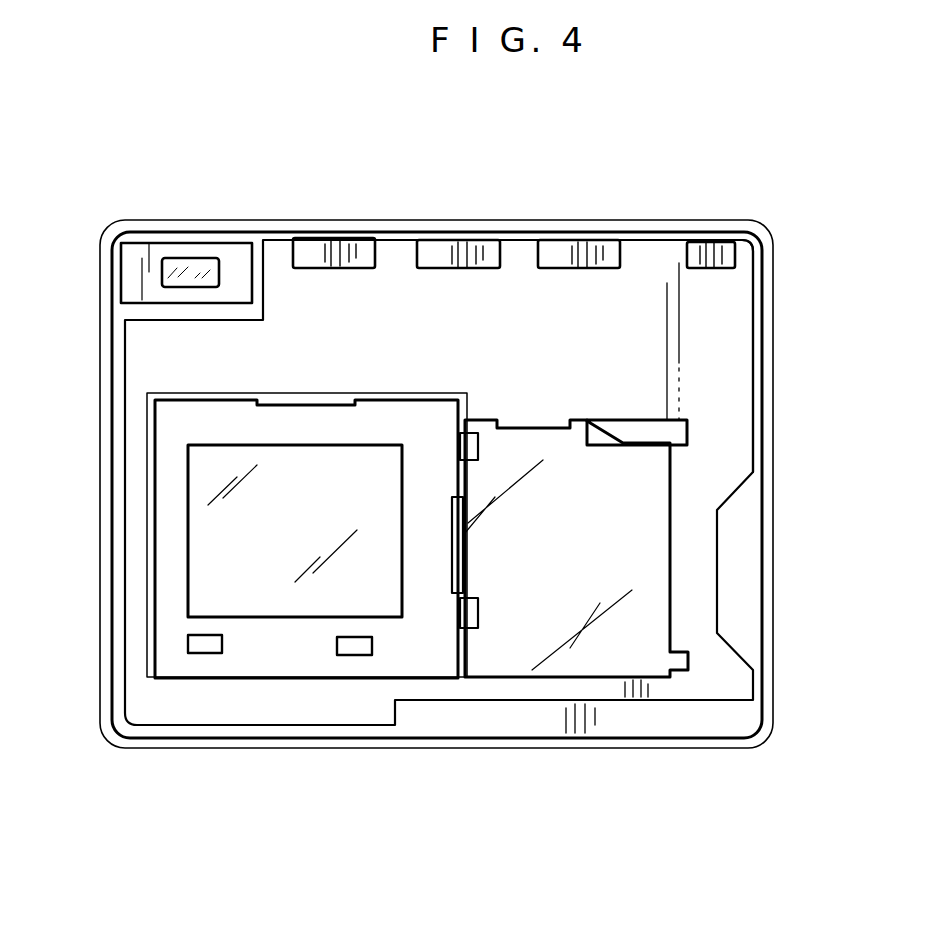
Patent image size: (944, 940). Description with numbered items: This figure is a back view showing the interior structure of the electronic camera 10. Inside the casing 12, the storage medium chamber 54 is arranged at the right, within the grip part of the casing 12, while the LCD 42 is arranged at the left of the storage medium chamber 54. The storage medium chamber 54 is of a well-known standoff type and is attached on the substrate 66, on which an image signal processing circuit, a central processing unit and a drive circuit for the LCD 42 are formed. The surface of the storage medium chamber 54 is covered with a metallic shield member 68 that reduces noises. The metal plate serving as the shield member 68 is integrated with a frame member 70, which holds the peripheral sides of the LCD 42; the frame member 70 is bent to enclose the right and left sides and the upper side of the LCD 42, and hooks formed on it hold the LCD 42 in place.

The electronic camera 10 is at (292, 216).
The casing 12 is at (768, 670).
The LCD 42 is at (383, 441).
The storage medium chamber 54 is at (575, 418).
The substrate 66 is at (705, 356).
The shield member 68 is at (517, 640).
The frame member 70 is at (148, 485).